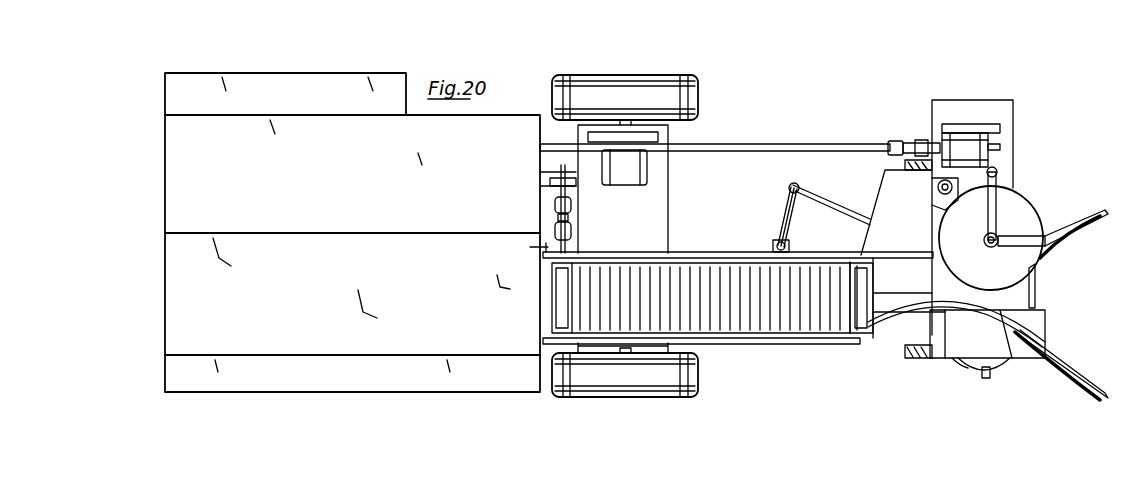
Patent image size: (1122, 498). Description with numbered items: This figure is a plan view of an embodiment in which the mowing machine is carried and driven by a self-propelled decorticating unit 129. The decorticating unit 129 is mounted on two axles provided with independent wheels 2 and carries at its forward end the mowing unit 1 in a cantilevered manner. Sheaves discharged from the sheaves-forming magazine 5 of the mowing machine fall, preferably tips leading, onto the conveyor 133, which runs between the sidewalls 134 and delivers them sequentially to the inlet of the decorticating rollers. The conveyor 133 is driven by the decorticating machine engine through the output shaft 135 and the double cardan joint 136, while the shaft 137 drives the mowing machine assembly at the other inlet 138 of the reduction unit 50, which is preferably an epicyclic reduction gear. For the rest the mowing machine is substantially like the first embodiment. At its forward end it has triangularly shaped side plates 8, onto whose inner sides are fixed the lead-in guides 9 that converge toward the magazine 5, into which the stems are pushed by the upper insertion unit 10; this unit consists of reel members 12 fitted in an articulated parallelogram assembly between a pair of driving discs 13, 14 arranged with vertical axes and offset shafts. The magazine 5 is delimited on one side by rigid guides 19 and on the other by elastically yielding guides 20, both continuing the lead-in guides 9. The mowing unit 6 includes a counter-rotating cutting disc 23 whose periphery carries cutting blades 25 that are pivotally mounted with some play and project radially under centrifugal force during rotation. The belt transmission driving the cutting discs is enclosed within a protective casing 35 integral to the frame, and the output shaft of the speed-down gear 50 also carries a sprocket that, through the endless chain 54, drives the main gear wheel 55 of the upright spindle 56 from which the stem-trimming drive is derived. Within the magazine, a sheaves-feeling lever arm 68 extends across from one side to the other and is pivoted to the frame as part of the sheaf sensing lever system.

The mowing and sheaves-picking machine 1 is at (784, 134).
The wheels 2 is at (638, 78).
The magazine 5 is at (885, 320).
The mowing unit 6 is at (1000, 370).
The side plates 8 is at (1098, 210).
The lead-in guides 9 is at (1083, 228).
The upper insertion unit 10 is at (1030, 196).
The reel members 12 is at (1036, 293).
The driving disc 13 is at (1026, 228).
The driving disc 14 is at (1004, 184).
The rigid guides 19 is at (866, 262).
The elastically yielding guides 20 is at (850, 330).
The cutting disc 23 is at (960, 366).
The cutting blades 25 is at (980, 378).
The protective casing 35 is at (1012, 128).
The speed-down gear 50 is at (966, 135).
The endless chain 54 is at (978, 190).
The main gear wheel 55 is at (935, 200).
The upright spindle 56 is at (938, 187).
The sheaves-feeling lever arm 68 is at (908, 325).
The decorticating unit 129 is at (333, 72).
The conveyor 133 is at (726, 268).
The sidewalls 134 is at (680, 256).
The output shaft 135 is at (532, 248).
The double cardan joint 136 is at (576, 196).
The shaft 137 is at (738, 152).
The inlet 138 is at (930, 143).